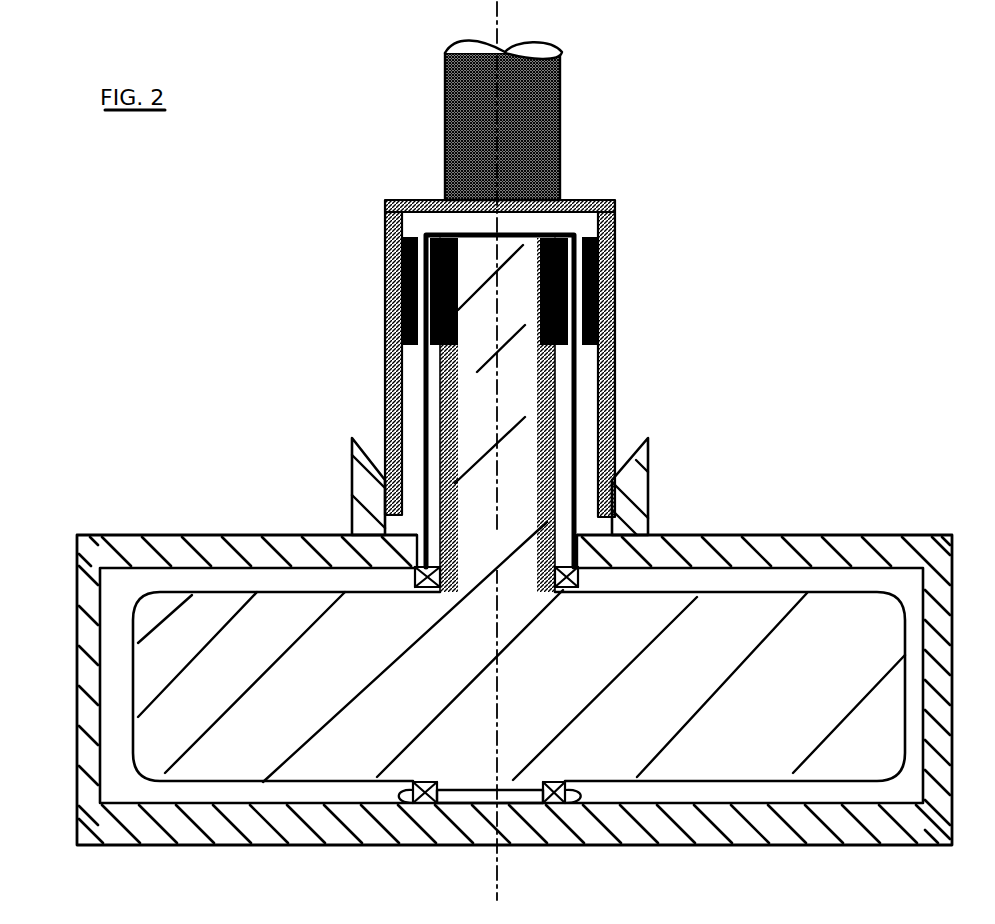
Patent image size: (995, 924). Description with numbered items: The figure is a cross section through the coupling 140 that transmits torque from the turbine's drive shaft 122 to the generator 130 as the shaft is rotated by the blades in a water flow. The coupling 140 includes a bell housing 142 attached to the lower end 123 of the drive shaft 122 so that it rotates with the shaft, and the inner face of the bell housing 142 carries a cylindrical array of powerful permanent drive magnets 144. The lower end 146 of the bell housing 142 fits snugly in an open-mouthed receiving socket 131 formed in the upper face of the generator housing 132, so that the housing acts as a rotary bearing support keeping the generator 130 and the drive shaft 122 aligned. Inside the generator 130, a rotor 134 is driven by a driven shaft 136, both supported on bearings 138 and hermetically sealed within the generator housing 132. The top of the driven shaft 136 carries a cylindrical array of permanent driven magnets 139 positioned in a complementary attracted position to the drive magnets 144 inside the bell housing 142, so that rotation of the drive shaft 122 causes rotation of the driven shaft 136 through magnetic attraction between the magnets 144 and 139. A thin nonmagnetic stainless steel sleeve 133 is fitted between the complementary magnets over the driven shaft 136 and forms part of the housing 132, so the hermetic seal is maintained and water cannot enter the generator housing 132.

The drive shaft 122 is at (563, 73).
The lower end of the drive shaft 123 is at (570, 175).
The generator 130 is at (488, 655).
The receiving socket 131 is at (650, 499).
The generator housing 132 is at (860, 533).
The nonmagnetic stainless steel sleeve 133 is at (578, 384).
The rotor 134 is at (712, 669).
The driven shaft 136 is at (512, 411).
The bearings 138 is at (412, 583).
The driven magnets 139 is at (433, 310).
The coupling 140 is at (541, 505).
The bell housing 142 is at (387, 367).
The drive magnets 144 is at (400, 272).
The lower end of the bell housing 146 is at (605, 492).